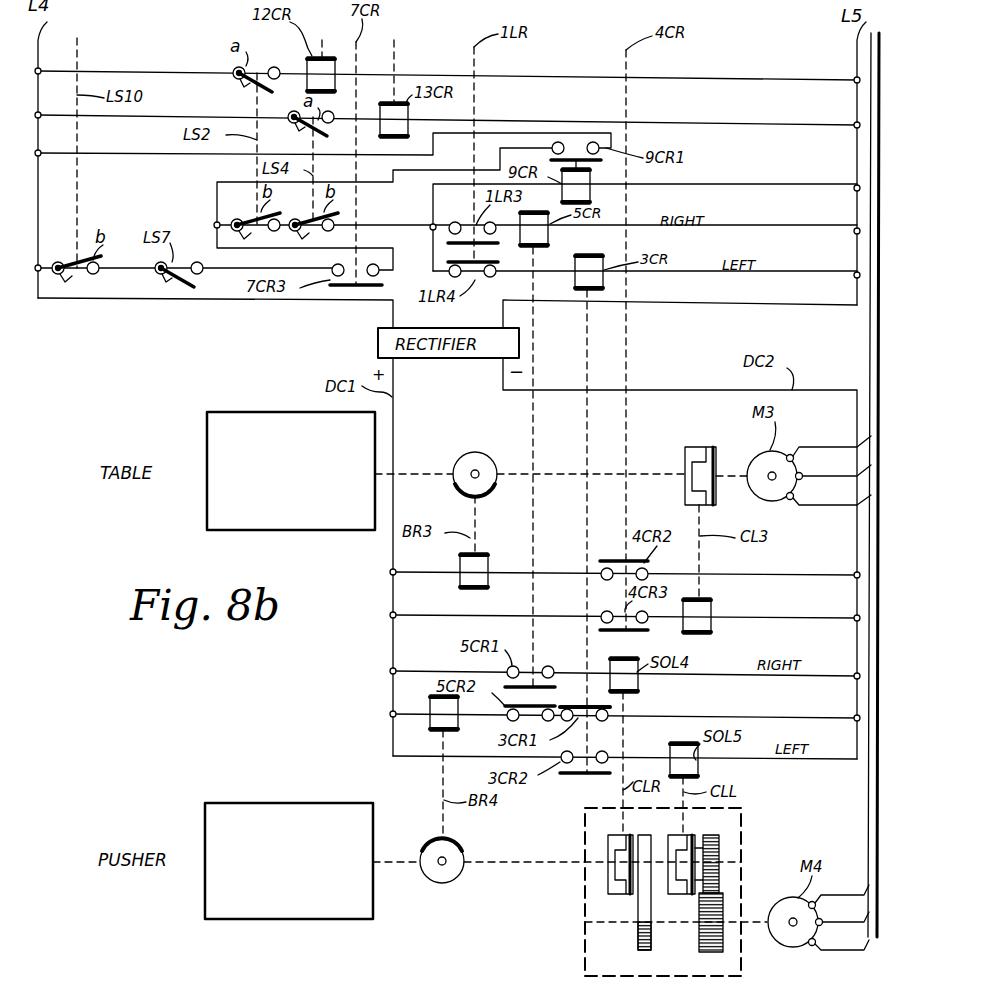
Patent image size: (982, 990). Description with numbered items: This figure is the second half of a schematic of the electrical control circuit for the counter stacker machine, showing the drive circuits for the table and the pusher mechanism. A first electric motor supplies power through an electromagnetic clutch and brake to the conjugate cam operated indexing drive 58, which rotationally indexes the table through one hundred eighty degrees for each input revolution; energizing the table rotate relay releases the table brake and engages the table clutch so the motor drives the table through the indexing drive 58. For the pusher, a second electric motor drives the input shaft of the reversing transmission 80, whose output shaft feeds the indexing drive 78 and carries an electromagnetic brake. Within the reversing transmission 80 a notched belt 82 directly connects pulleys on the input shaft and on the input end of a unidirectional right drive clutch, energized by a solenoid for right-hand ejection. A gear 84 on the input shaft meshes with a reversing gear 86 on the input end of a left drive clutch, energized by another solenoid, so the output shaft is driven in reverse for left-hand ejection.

The conjugate cam operated indexing drive 58 is at (207, 418).
The indexing drive 78 is at (205, 812).
The reversing transmission 80 is at (743, 818).
The notched belt 82 is at (645, 925).
The gear 84 is at (700, 935).
The reversing gear 86 is at (719, 848).